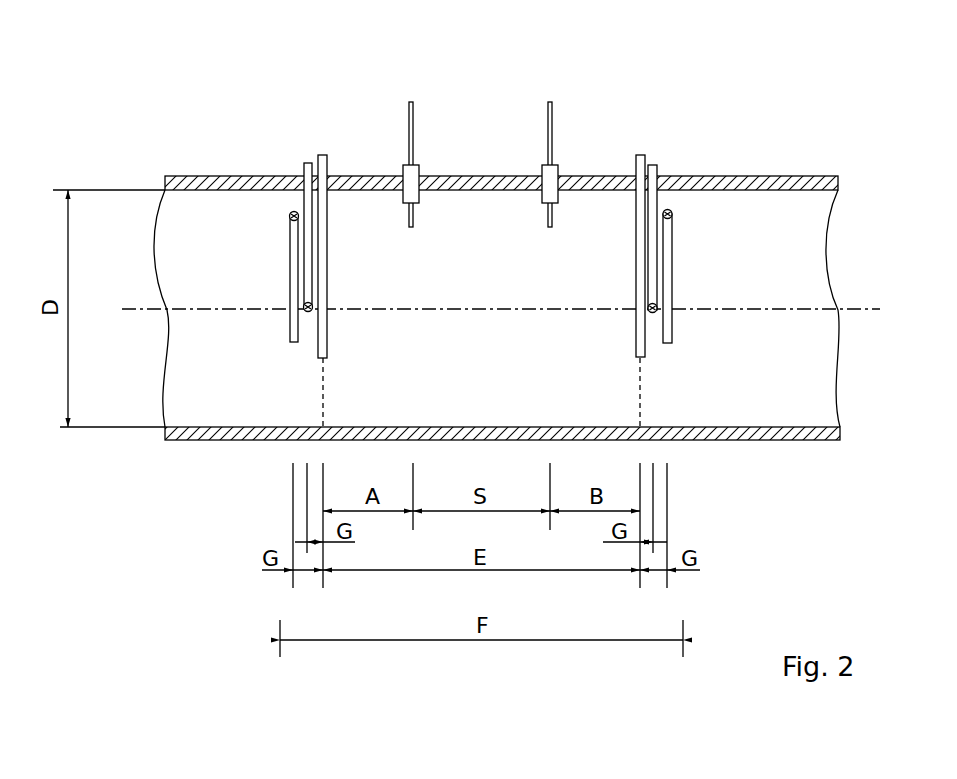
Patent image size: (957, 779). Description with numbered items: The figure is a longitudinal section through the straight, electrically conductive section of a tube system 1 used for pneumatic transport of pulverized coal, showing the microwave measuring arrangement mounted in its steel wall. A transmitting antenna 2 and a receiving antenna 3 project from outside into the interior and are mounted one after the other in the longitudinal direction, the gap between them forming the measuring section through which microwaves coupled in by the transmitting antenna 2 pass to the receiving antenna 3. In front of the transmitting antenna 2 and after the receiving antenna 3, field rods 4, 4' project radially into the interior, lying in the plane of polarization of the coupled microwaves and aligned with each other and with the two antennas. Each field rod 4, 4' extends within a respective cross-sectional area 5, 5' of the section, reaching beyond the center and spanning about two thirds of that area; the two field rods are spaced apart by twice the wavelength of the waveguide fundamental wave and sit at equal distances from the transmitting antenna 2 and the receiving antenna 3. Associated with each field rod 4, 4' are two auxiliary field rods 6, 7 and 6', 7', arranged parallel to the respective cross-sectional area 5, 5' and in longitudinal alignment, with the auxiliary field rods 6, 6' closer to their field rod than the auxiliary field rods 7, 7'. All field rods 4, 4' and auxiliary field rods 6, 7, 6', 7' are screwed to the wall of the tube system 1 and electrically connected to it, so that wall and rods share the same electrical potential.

The tube system 1 is at (805, 177).
The transmitting antenna 2 is at (413, 107).
The receiving antenna 3 is at (552, 107).
The field rod 4 is at (347, 205).
The field rod 4' is at (667, 207).
The cross-sectional area 5 is at (358, 376).
The cross-sectional area 5' is at (604, 380).
The auxiliary field rod 6 is at (288, 189).
The auxiliary field rod 6' is at (688, 203).
The auxiliary field rod 7 is at (256, 204).
The auxiliary field rod 7' is at (719, 218).